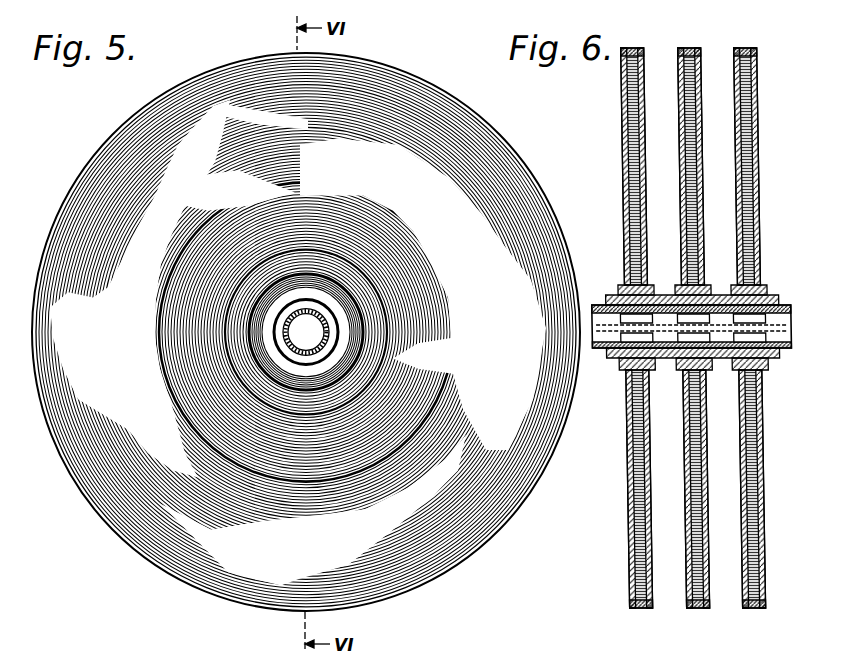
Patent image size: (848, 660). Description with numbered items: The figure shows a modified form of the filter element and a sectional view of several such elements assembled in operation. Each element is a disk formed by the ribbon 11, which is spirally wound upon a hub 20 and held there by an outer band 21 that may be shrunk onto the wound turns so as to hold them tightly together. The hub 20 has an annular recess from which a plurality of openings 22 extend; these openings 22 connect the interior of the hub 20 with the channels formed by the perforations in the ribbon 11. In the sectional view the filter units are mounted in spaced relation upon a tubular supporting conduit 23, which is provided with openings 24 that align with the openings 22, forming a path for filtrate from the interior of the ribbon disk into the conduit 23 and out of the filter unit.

In FIG. 5, the ribbon 11 is at (614, 107).
In FIG. 6, the ribbon 11 is at (688, 91).
In FIG. 5, the hub 20 is at (312, 290).
In FIG. 6, the hub 20 is at (636, 290).
In FIG. 5, the outer band 21 is at (447, 92).
In FIG. 6, the outer band 21 is at (624, 40).
In FIG. 6, the openings 22 is at (614, 283).
In FIG. 5, the tubular supporting conduit 23 is at (312, 308).
In FIG. 6, the tubular supporting conduit 23 is at (590, 330).
In FIG. 6, the openings 24 is at (675, 327).